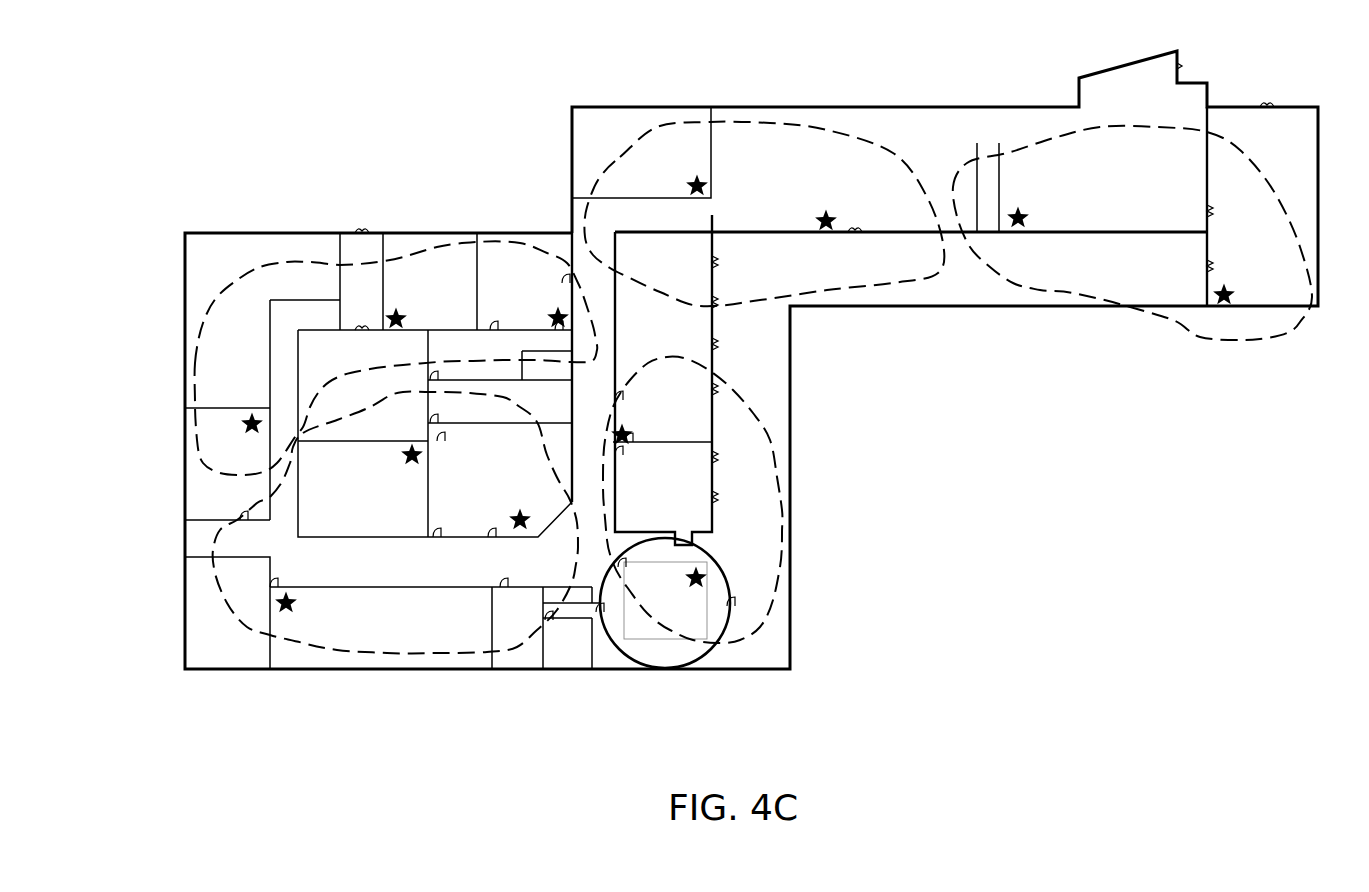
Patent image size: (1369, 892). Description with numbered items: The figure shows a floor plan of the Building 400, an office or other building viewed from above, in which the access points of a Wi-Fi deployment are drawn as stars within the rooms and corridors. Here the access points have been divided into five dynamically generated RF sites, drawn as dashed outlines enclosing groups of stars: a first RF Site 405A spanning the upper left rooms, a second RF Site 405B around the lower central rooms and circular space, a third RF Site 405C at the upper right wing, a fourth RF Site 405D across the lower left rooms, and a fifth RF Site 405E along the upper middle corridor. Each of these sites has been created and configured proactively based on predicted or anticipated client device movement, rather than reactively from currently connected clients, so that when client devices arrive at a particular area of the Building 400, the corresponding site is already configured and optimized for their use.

The Building 400 is at (238, 93).
The RF Site 405A is at (202, 334).
The RF Site 405B is at (784, 508).
The RF Site 405C is at (1210, 340).
The RF Site 405D is at (330, 647).
The RF Site 405E is at (877, 283).